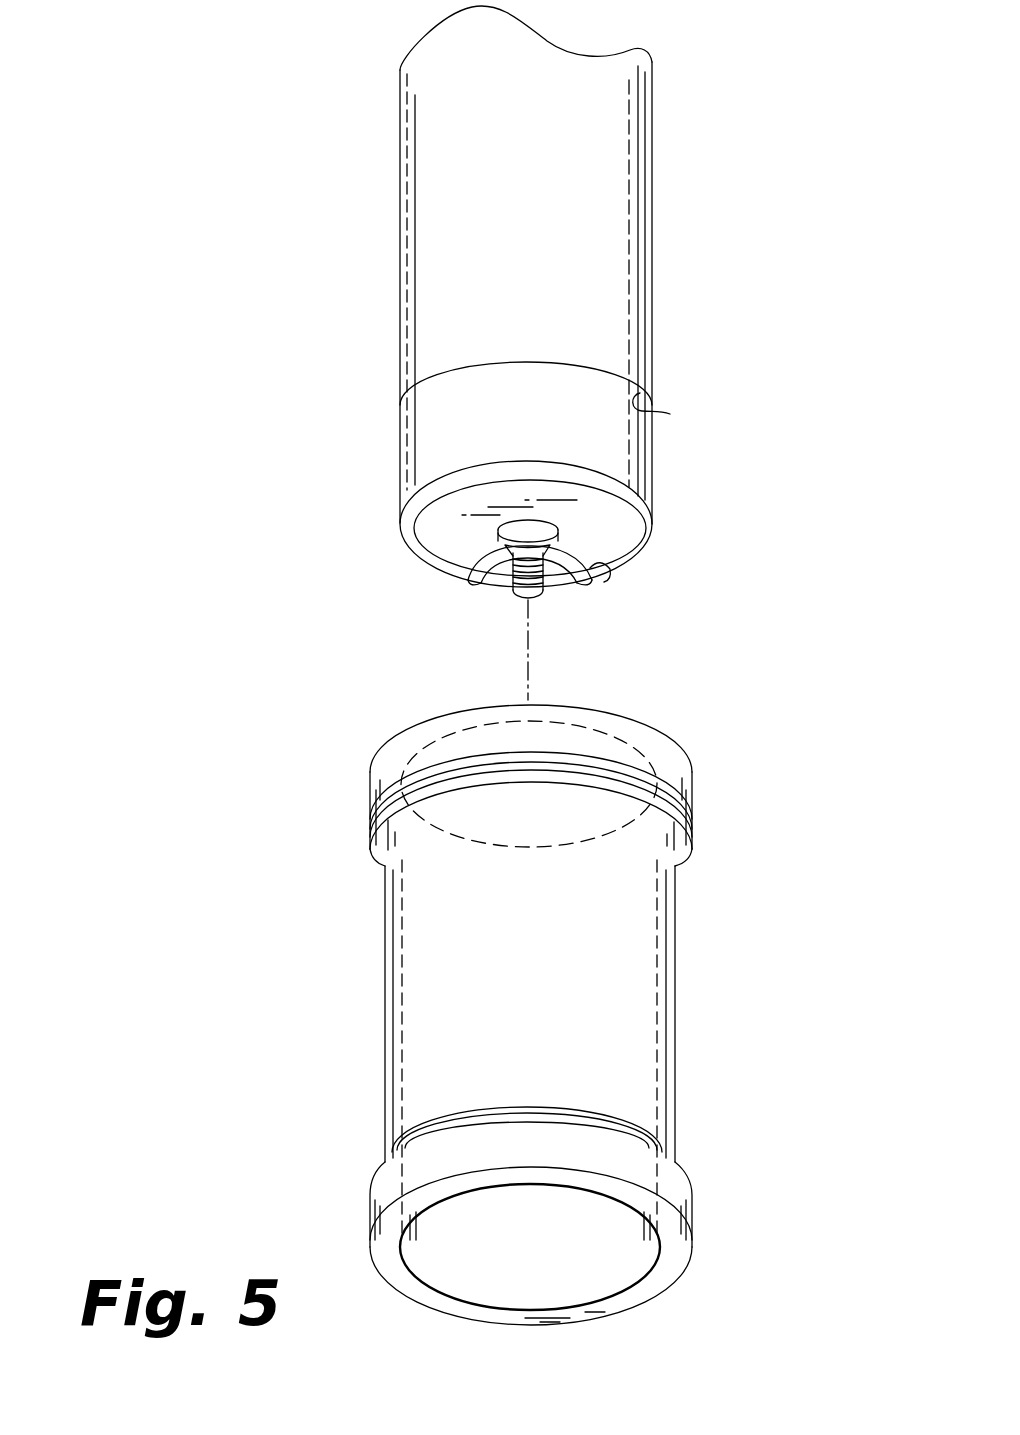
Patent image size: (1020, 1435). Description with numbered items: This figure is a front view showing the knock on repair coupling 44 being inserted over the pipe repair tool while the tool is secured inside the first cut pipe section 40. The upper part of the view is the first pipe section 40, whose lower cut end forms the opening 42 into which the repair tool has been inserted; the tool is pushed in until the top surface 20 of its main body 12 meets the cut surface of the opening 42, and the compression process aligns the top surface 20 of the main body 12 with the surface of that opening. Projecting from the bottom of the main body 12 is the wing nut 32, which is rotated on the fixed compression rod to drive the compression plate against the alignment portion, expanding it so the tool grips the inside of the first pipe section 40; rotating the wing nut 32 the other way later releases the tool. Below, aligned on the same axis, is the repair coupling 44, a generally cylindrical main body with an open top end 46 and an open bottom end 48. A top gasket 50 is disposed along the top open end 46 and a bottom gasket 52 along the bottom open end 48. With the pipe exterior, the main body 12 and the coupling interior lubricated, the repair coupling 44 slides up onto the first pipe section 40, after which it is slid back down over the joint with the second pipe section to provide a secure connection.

The main body 12 is at (633, 460).
The top surface 20 is at (670, 414).
The wing nut 32 is at (608, 571).
The first cut pipe section 40 is at (633, 158).
The opening 42 is at (432, 386).
The knock on repair coupling 44 is at (676, 994).
The open top end 46 is at (600, 738).
The open bottom end 48 is at (672, 1284).
The top gasket 50 is at (660, 746).
The bottom gasket 52 is at (637, 1213).